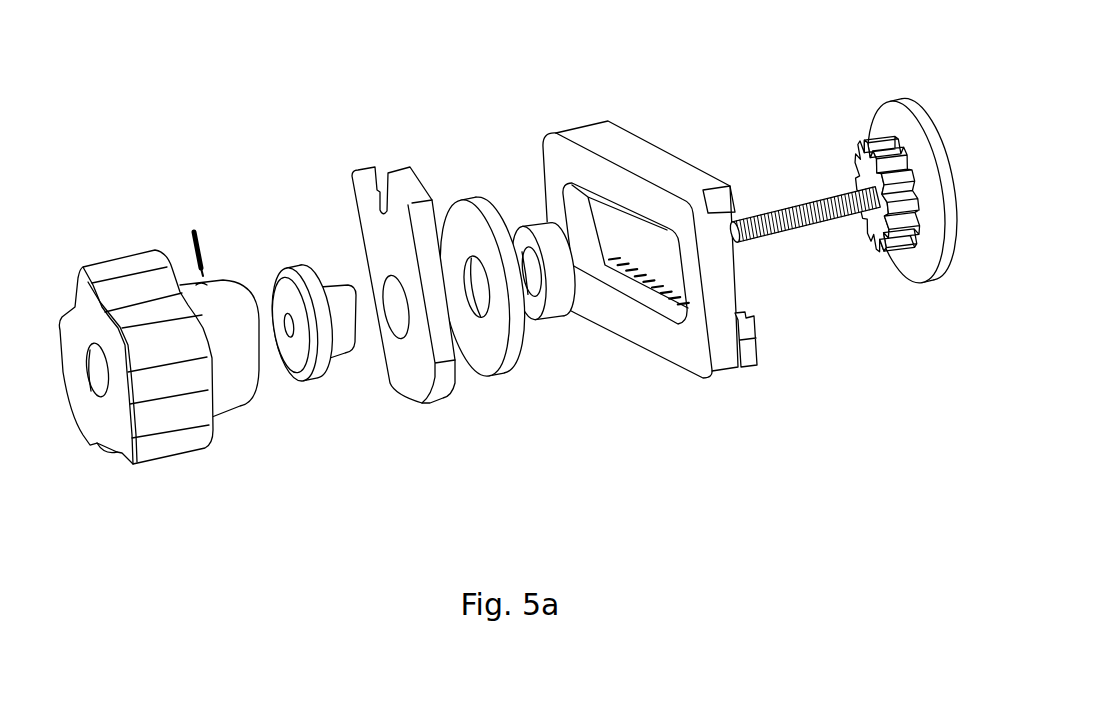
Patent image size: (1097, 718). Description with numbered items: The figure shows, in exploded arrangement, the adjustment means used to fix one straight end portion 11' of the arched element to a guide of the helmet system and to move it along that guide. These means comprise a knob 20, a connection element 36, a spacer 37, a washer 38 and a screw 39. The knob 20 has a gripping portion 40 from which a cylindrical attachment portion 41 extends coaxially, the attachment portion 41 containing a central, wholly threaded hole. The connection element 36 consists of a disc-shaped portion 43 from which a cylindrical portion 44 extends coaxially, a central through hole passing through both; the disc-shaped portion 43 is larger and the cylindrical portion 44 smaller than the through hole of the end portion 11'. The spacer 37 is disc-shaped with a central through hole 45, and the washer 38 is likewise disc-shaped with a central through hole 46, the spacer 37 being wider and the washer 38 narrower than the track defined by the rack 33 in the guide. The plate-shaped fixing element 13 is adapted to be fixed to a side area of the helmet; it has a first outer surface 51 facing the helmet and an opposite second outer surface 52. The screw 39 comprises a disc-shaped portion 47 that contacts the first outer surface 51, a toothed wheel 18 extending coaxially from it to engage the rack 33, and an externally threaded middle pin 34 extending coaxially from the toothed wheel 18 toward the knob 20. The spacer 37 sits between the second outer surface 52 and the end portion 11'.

The knob 20 is at (154, 355).
The gripping portion 40 is at (172, 442).
The attachment portion 41 is at (235, 383).
The connection element 36 is at (326, 307).
The disc-shaped portion 43 is at (328, 376).
The cylindrical portion 44 is at (350, 344).
The end portion 11' is at (403, 240).
The through hole 46 is at (527, 266).
The washer 38 is at (542, 249).
The through hole 45 is at (502, 323).
The spacer 37 is at (499, 323).
The fixing element 13 is at (669, 224).
The second outer surface 52 is at (553, 152).
The first outer surface 51 is at (736, 195).
The rack 33 is at (743, 368).
The middle pin 34 is at (773, 237).
The screw 39 is at (903, 192).
The toothed wheel 18 is at (883, 227).
The disc-shaped portion 47 is at (940, 272).